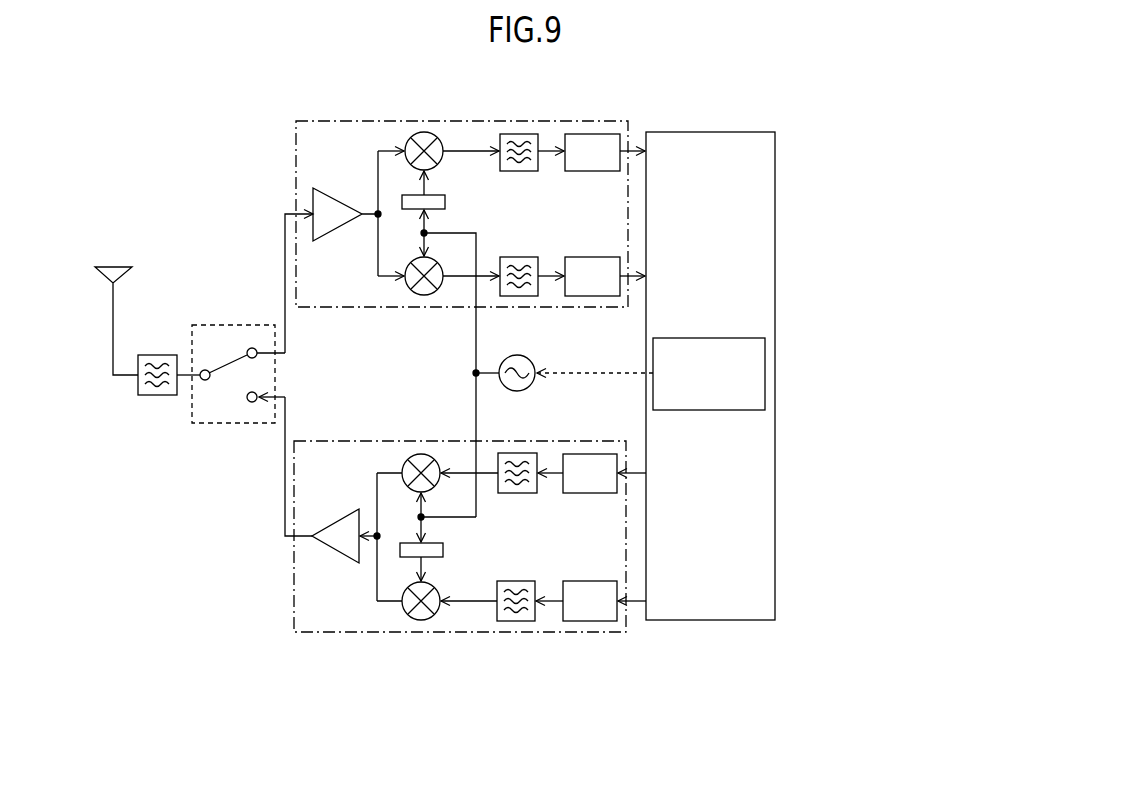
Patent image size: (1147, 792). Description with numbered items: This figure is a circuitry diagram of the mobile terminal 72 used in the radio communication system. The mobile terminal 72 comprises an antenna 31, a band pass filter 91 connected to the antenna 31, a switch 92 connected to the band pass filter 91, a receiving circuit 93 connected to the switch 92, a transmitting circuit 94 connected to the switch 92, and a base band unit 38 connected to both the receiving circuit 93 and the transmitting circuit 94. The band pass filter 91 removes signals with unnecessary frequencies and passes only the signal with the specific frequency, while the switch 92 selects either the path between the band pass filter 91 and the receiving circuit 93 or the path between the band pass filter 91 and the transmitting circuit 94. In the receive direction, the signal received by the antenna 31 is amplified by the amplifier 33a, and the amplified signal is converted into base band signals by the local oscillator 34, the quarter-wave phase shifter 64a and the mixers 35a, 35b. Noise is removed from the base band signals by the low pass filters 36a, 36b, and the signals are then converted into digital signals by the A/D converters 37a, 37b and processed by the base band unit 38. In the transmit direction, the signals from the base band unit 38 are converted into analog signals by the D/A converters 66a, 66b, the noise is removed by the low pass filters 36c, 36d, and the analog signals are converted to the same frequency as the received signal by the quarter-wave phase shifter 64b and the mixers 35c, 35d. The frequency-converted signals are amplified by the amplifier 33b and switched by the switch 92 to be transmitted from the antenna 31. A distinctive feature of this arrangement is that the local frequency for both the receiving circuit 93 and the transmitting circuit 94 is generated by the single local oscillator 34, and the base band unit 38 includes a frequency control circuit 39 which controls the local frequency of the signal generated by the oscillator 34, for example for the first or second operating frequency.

The antenna 31 is at (120, 272).
The band pass filter 91 is at (150, 396).
The switch 92 is at (232, 424).
The receiving circuit 93 is at (296, 158).
The transmitting circuit 94 is at (294, 588).
The amplifier 33a is at (323, 197).
The amplifier 33b is at (348, 513).
The mixer 35a is at (424, 131).
The mixer 35b is at (424, 296).
The mixer 35c is at (425, 455).
The mixer 35d is at (421, 621).
The low pass filter 36a is at (528, 133).
The low pass filter 36b is at (513, 297).
The low pass filter 36c is at (520, 459).
The low pass filter 36d is at (510, 622).
The A/D converter 37a is at (595, 136).
The A/D converter 37b is at (597, 297).
The D/A converter 66a is at (593, 460).
The D/A converter 66b is at (590, 621).
The π/2 phase shifter 64a is at (403, 207).
The π/2 phase shifter 64b is at (400, 553).
The local oscillator 34 is at (535, 359).
The base band unit 38 is at (777, 158).
The frequency control circuit 39 is at (757, 378).
The mobile terminal 72 is at (757, 333).